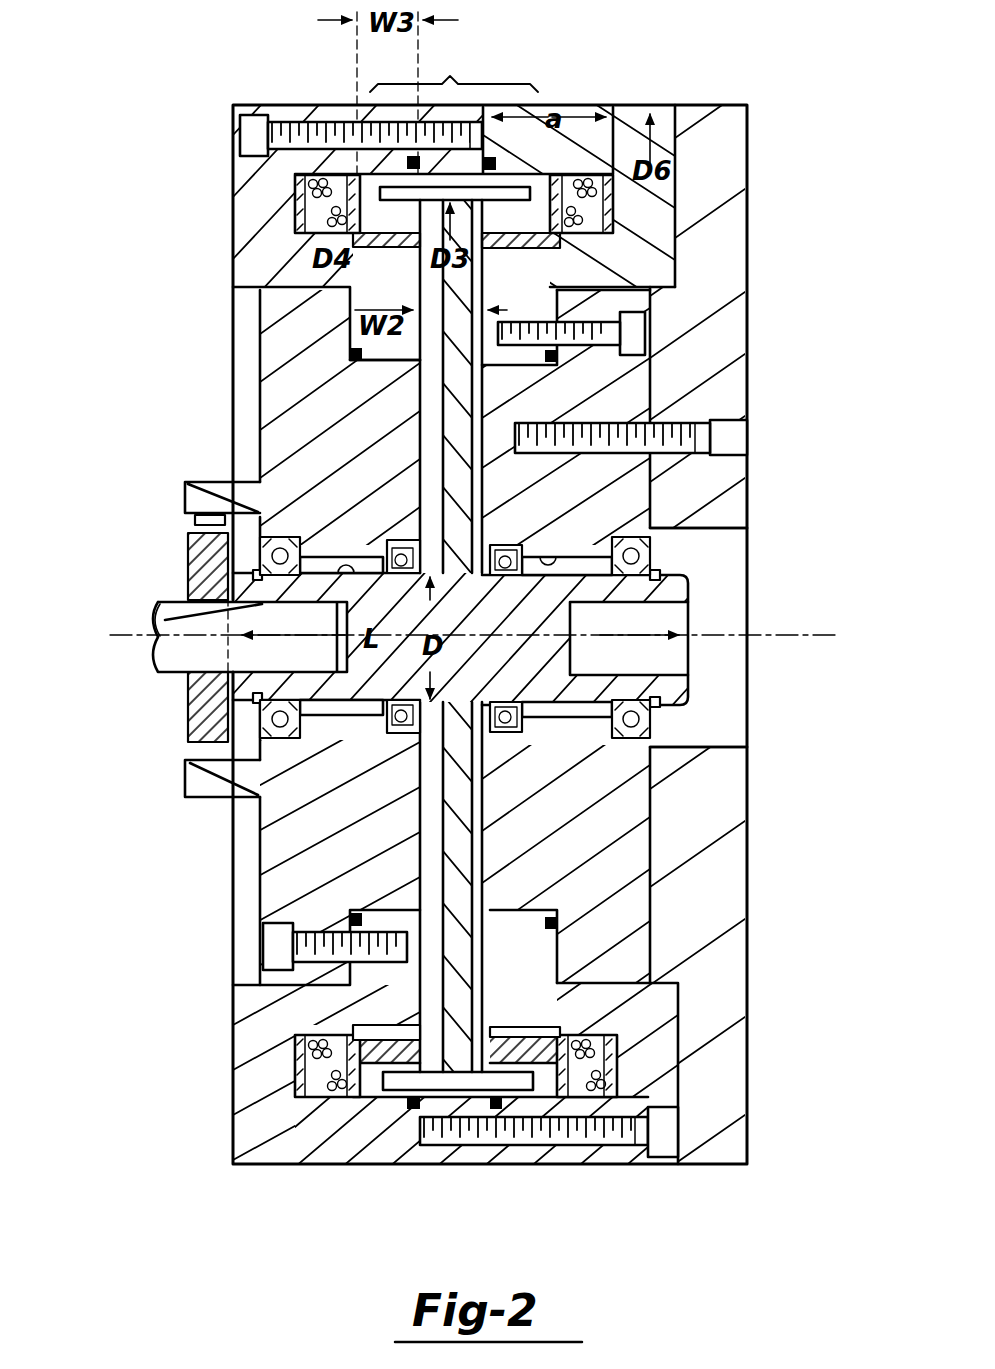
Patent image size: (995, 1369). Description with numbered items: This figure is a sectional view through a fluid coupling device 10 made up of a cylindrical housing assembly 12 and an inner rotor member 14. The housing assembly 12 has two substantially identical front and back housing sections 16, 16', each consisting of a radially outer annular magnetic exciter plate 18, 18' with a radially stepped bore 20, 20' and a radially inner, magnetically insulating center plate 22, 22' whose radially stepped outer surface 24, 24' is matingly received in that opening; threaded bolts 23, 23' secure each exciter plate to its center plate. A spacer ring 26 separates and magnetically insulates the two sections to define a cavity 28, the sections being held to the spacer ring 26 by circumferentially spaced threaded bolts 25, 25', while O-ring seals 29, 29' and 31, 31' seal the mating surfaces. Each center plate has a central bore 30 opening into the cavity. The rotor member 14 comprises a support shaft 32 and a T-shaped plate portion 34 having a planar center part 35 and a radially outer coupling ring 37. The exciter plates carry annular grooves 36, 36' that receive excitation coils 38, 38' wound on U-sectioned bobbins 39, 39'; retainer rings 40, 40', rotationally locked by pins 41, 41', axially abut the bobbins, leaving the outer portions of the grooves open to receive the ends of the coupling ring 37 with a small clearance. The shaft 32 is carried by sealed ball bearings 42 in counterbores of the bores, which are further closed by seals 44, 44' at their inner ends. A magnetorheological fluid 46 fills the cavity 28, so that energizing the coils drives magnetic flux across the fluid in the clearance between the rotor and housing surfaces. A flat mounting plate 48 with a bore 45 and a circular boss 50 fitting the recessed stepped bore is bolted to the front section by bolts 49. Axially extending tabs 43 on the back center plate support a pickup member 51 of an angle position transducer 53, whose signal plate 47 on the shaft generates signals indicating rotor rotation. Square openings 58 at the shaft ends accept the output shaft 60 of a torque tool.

The fluid coupling device 10 is at (782, 70).
The housing assembly 12 is at (454, 66).
The rotor member 14 is at (650, 487).
The front housing section 16 is at (487, 584).
The back housing section 16' is at (451, 208).
The magnetic exciter plate 18 is at (732, 213).
The magnetic exciter plate 18' is at (321, 253).
The radially stepped bore 20 is at (684, 275).
The radially stepped bore 20' is at (225, 637).
The center plate 22 is at (728, 387).
The center plate 22' is at (285, 396).
The threaded bolt 23 is at (659, 319).
The threaded bolt 23' is at (277, 941).
The radially stepped outer surface 24 is at (566, 413).
The radially stepped outer surface 24' is at (371, 387).
The threaded bolt 25 is at (712, 1164).
The threaded bolt 25' is at (320, 149).
The spacer ring 26 is at (452, 1143).
The cavity 28 is at (533, 908).
The O-ring seal 29 is at (593, 300).
The O-ring seal 29' is at (313, 333).
The central bore 30 is at (340, 558).
The O-ring seal 31 is at (529, 667).
The O-ring seal 31' is at (361, 638).
The support shaft 32 is at (372, 700).
The plate portion 34 is at (477, 700).
The center part 35 is at (452, 813).
The annular groove 36 is at (583, 1129).
The annular groove 36' is at (336, 1128).
The coupling ring 37 is at (363, 1087).
The excitation coil 38 is at (683, 1025).
The excitation coil 38' is at (254, 1080).
The bobbin 39 is at (631, 1022).
The bobbin 39' is at (284, 972).
The retainer ring 40 is at (552, 236).
The retainer ring 40' is at (348, 231).
The pin 41 is at (552, 995).
The pin 41' is at (386, 1014).
The sealed bearing 42 is at (650, 730).
The tab 43 is at (192, 497).
The seal 44 is at (503, 638).
The seal 44' is at (392, 636).
The bore 45 is at (730, 548).
The magnetorheological fluid 46 is at (493, 878).
The signal plate 47 is at (188, 557).
The mounting plate 48 is at (720, 788).
The bolt 49 is at (640, 440).
The circular boss 50 is at (652, 743).
The pickup member 51 is at (197, 518).
The angle position transducer 53 is at (173, 692).
The square opening 58 is at (690, 613).
The output shaft 60 is at (157, 668).